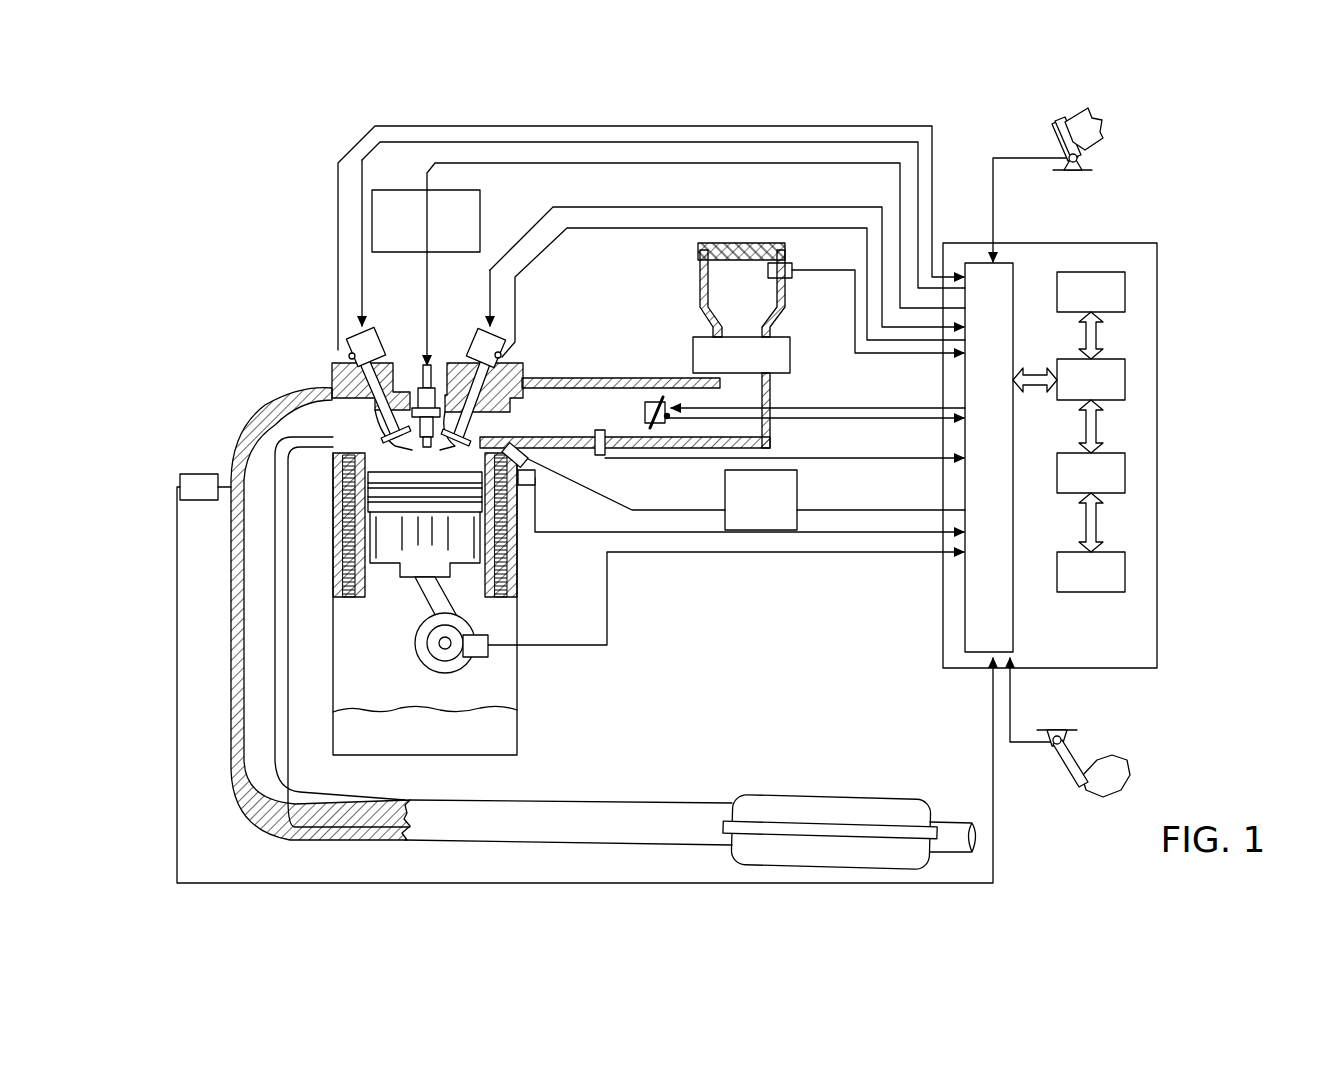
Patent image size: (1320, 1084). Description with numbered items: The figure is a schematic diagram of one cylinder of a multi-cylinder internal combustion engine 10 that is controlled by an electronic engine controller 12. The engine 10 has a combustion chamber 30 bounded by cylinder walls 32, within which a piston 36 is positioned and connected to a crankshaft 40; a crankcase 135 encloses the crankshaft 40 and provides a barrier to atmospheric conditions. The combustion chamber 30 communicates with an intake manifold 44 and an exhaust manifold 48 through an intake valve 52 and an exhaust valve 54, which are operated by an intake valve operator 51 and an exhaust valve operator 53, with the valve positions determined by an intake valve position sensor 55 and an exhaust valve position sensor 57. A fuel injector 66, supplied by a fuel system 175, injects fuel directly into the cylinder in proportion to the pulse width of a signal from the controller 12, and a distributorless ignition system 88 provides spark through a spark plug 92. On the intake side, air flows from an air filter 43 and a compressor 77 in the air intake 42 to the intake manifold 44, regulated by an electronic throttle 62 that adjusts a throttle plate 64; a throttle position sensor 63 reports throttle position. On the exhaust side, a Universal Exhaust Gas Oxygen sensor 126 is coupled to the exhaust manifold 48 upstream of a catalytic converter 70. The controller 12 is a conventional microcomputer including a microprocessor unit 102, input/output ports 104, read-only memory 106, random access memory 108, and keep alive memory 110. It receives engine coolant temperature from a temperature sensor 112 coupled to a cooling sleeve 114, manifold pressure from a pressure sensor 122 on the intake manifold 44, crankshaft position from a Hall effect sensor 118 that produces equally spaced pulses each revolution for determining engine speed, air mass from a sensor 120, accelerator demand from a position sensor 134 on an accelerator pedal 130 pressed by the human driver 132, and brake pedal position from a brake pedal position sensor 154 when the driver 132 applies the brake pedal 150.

The internal combustion engine 10 is at (271, 320).
The electronic engine controller 12 is at (1157, 243).
The combustion chamber 30 is at (418, 468).
The cylinder walls 32 is at (365, 585).
The piston 36 is at (408, 549).
The crankshaft 40 is at (432, 662).
The air intake 42 is at (742, 293).
The air filter 43 is at (698, 245).
The intake manifold 44 is at (625, 410).
The exhaust manifold 48 is at (481, 616).
The intake valve operator 51 is at (490, 331).
The intake valve 52 is at (478, 425).
The exhaust valve operator 53 is at (362, 330).
The exhaust valve 54 is at (378, 420).
The intake valve position sensor 55 is at (501, 356).
The exhaust valve position sensor 57 is at (349, 355).
The electronic throttle 62 is at (650, 401).
The throttle position sensor 63 is at (669, 419).
The throttle plate 64 is at (648, 428).
The fuel injector 66 is at (528, 462).
The catalytic converter 70 is at (775, 797).
The compressor 77 is at (741, 355).
The distributorless ignition system 88 is at (385, 190).
The spark plug 92 is at (433, 365).
The microprocessor unit 102 is at (1125, 382).
The input/output ports 104 is at (1013, 270).
The read-only memory 106 is at (1125, 290).
The random access memory 108 is at (1125, 476).
The keep alive memory 110 is at (1125, 573).
The temperature sensor 112 is at (537, 487).
The cooling sleeve 114 is at (507, 555).
The Hall effect sensor 118 is at (488, 640).
The air mass sensor 120 is at (786, 263).
The pressure sensor 122 is at (598, 455).
The Universal Exhaust Gas Oxygen sensor 126 is at (180, 480).
The accelerator pedal 130 is at (1053, 140).
The human driver 132 is at (1100, 118).
The position sensor 134 is at (1080, 158).
The crankcase 135 is at (493, 673).
The brake pedal 150 is at (1080, 785).
The brake pedal position sensor 154 is at (1050, 740).
The fuel system 175 is at (761, 500).